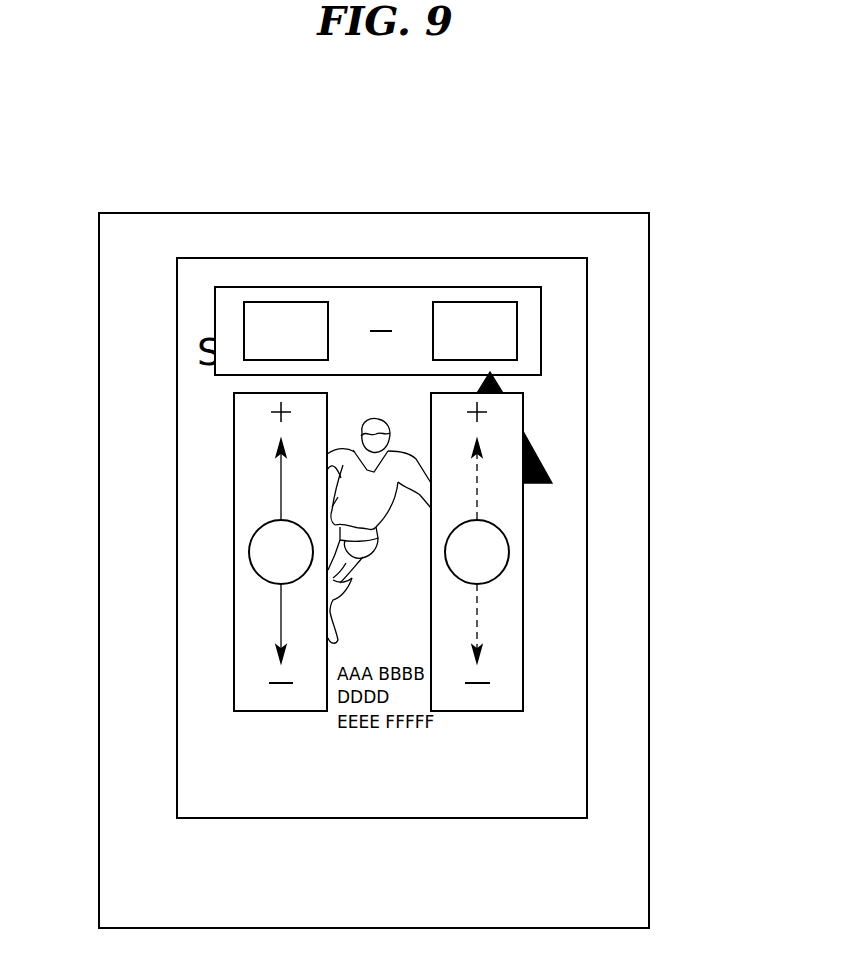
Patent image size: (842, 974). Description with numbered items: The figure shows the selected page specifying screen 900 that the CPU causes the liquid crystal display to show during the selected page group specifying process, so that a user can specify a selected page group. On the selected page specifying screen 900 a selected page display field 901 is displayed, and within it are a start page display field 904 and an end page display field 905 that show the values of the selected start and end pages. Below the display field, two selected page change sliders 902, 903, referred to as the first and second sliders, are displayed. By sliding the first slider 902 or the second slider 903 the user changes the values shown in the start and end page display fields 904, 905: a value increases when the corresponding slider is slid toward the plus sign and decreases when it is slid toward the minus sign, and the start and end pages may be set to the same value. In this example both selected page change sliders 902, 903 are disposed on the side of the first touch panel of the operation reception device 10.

The operation reception device 10 is at (531, 213).
The selected page specifying screen 900 is at (318, 258).
The selected page display field 901 is at (427, 287).
The selected page change slider 902 is at (234, 448).
The selected page change slider 903 is at (524, 414).
The start page display field 904 is at (263, 302).
The end page display field 905 is at (542, 323).